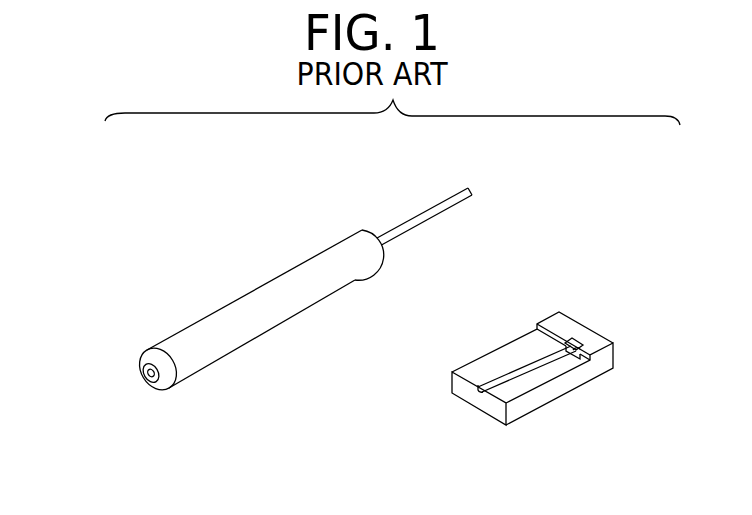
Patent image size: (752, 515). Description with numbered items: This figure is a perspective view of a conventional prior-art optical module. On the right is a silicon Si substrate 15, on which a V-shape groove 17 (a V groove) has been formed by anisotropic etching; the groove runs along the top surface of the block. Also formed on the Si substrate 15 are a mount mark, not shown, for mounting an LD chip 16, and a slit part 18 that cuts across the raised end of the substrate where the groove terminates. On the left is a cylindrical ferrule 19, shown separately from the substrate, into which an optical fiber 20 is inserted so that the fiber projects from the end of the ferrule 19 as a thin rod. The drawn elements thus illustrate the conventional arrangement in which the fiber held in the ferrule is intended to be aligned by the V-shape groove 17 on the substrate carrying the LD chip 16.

The Si substrate 15 is at (568, 390).
The LD chip 16 is at (577, 342).
The V-shape groove 17 is at (500, 383).
The slit part 18 is at (592, 352).
The ferrule 19 is at (188, 337).
The optical fiber 20 is at (415, 215).